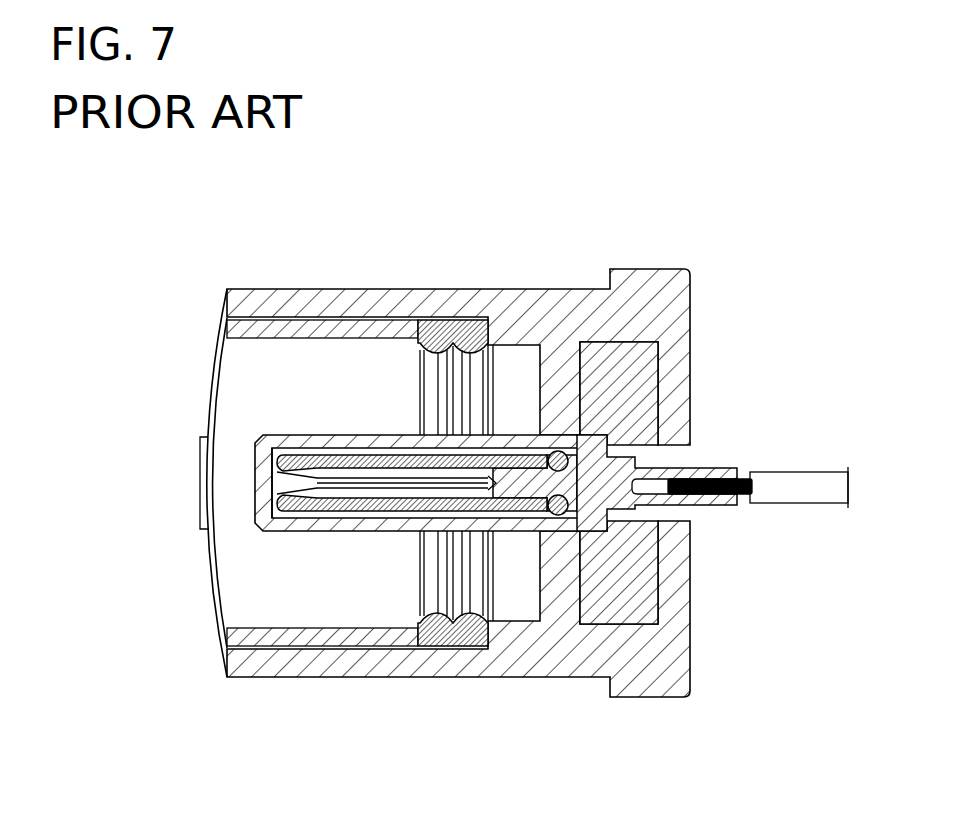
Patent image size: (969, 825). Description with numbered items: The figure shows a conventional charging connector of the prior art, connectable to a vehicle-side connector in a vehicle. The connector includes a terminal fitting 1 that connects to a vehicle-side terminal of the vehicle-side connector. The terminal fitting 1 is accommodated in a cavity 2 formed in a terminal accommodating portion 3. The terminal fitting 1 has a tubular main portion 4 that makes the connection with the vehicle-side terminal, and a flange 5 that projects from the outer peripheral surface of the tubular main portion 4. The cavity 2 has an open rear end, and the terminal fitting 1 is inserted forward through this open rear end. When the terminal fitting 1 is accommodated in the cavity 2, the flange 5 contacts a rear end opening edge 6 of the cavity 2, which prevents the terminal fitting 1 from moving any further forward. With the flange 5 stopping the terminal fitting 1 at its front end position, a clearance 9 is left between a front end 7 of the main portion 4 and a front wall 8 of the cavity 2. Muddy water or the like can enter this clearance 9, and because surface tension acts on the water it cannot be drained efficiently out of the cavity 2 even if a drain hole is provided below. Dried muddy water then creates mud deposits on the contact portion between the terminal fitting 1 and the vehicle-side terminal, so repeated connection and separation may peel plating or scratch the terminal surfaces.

The terminal fitting 1 is at (365, 455).
The cavity 2 is at (372, 518).
The terminal accommodating portion 3 is at (334, 522).
The tubular main portion 4 is at (520, 488).
The flange 5 is at (596, 527).
The rear end opening edge 6 is at (568, 527).
The front end 7 is at (263, 520).
The front wall 8 is at (263, 508).
The clearance 9 is at (273, 495).